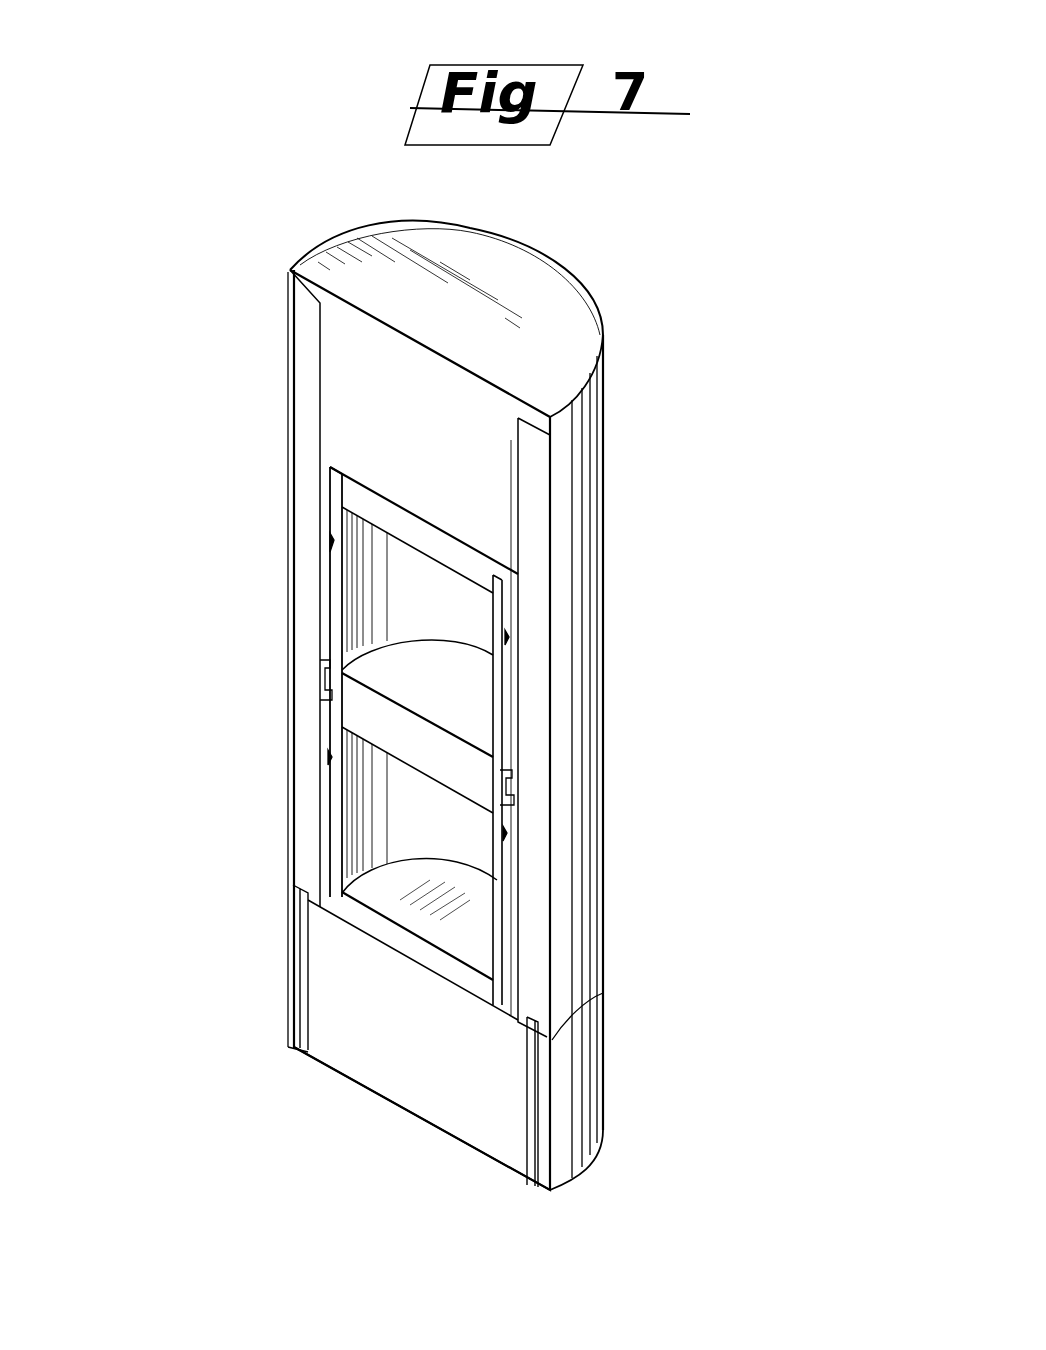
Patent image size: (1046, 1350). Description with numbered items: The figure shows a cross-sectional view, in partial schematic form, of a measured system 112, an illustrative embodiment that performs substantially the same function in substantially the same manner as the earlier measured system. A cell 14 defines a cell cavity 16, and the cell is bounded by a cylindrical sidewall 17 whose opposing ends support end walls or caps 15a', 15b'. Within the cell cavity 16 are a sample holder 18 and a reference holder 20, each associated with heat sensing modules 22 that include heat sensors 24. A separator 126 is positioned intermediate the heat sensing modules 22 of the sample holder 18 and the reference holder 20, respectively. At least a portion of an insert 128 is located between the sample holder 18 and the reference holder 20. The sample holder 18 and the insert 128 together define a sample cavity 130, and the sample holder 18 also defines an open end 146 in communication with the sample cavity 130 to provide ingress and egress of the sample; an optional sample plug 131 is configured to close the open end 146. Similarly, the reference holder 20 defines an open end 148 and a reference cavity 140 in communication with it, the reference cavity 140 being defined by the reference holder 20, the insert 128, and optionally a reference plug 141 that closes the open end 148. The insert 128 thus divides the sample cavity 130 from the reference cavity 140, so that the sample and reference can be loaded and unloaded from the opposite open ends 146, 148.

The measured system 112 is at (330, 210).
The end wall or cap 15a' is at (536, 262).
The end wall or cap 15b' is at (400, 1124).
The cylindrical sidewall 17 is at (302, 306).
The cell 14 is at (300, 478).
The cell cavity 16 is at (300, 477).
The sample plug 131 is at (437, 533).
The sample holder 18 is at (297, 606).
The sample cavity 130 is at (380, 578).
The open end 146 is at (400, 553).
The insert 128 is at (455, 745).
The reference holder 20 is at (335, 830).
The open end 148 is at (363, 935).
The heat sensing module 22 is at (333, 542).
The heat sensor 24 is at (335, 548).
The separator 126 is at (320, 683).
The reference plug 141 is at (363, 932).
The reference cavity 140 is at (462, 910).